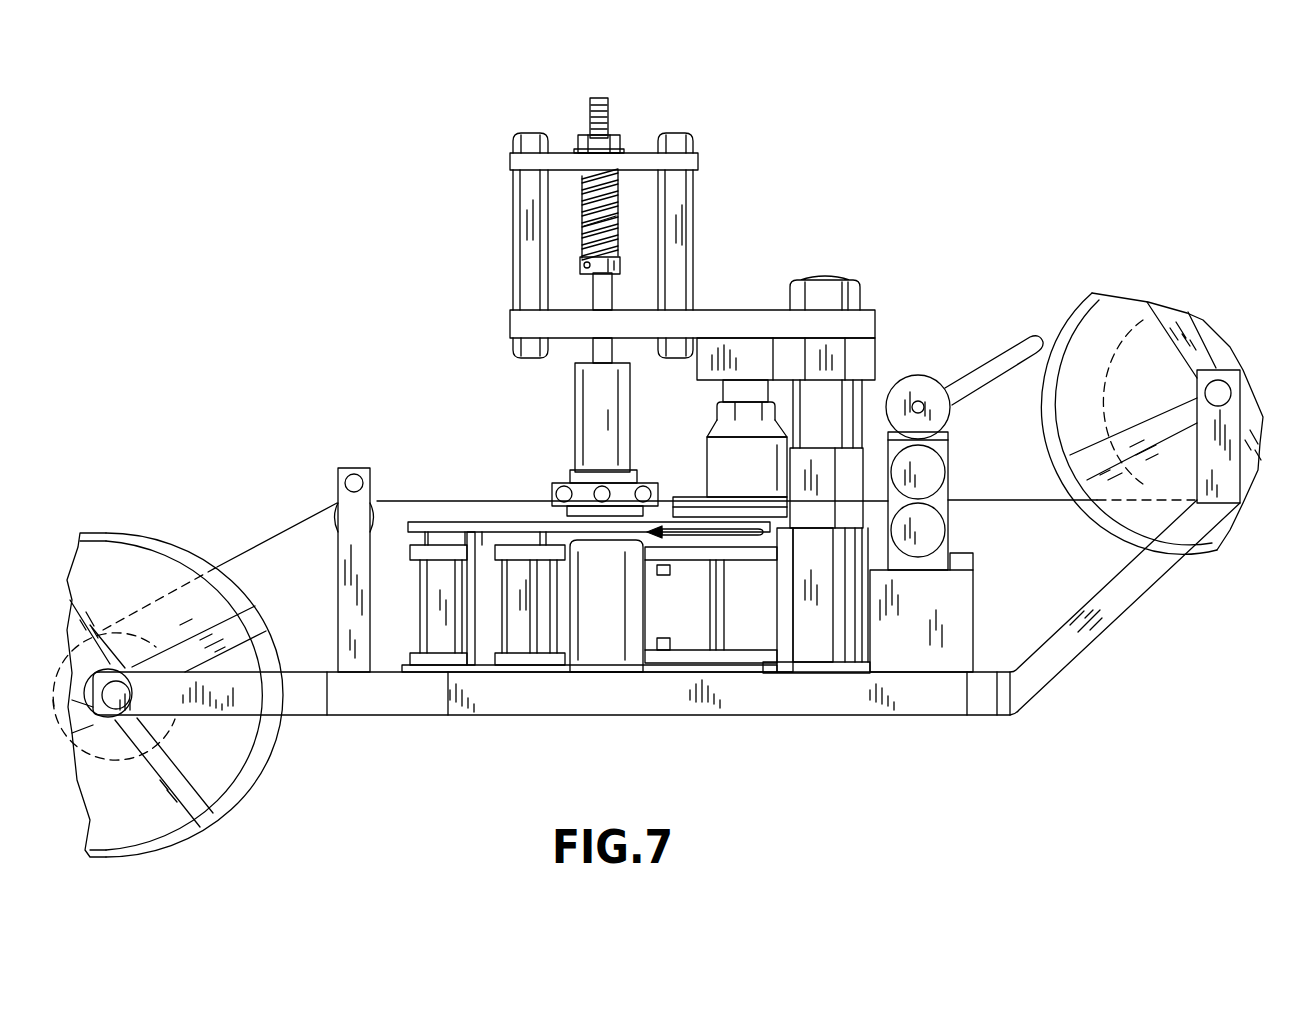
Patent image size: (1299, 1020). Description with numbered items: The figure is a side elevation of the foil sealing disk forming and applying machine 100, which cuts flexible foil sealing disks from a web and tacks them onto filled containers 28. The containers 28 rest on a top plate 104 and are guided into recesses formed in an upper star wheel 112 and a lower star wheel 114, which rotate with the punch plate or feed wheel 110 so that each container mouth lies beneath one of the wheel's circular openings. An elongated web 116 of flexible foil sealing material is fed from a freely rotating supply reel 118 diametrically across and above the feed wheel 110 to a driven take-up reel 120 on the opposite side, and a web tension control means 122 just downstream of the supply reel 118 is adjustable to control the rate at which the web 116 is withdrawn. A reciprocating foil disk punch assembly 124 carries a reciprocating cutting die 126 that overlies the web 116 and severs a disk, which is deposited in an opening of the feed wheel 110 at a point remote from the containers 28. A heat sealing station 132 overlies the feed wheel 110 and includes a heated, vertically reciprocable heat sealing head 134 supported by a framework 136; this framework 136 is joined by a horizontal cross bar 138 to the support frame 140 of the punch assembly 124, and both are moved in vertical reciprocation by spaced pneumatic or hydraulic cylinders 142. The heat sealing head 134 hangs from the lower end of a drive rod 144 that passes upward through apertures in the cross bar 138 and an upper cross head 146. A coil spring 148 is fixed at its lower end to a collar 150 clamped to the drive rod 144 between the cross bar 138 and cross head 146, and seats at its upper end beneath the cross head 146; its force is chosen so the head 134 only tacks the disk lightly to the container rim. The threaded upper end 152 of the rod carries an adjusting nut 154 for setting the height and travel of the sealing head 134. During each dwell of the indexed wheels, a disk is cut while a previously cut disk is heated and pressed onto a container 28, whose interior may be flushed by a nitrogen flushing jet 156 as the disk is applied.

The container 28 is at (625, 625).
The foil sealing disk forming and applying machine 100 is at (441, 172).
The top plate 104 is at (518, 688).
The rotating punch plate or feed wheel 110 is at (447, 520).
The upper star wheel 112 is at (414, 548).
The lower star wheel 114 is at (414, 660).
The web 116 is at (1005, 503).
The supply reel 118 is at (1068, 308).
The take-up reel 120 is at (130, 532).
The web tension control means 122 is at (918, 372).
The reciprocating foil disk punch assembly 124 is at (703, 450).
The reciprocating cutting die 126 is at (707, 478).
The heat sealing station 132 is at (570, 412).
The heat sealing head 134 is at (574, 510).
The framework 136 is at (725, 188).
The horizontal cross bar 138 is at (750, 325).
The support frame 140 is at (710, 366).
The pneumatic or hydraulic cylinders 142 is at (833, 427).
The drive rod 144 is at (598, 296).
The upper cross head 146 is at (633, 163).
The coil spring 148 is at (614, 224).
The collar 150 is at (617, 270).
The upper end of drive rod 152 is at (600, 98).
The adjusting nut 154 is at (616, 142).
The nitrogen flushing jet 156 is at (662, 540).